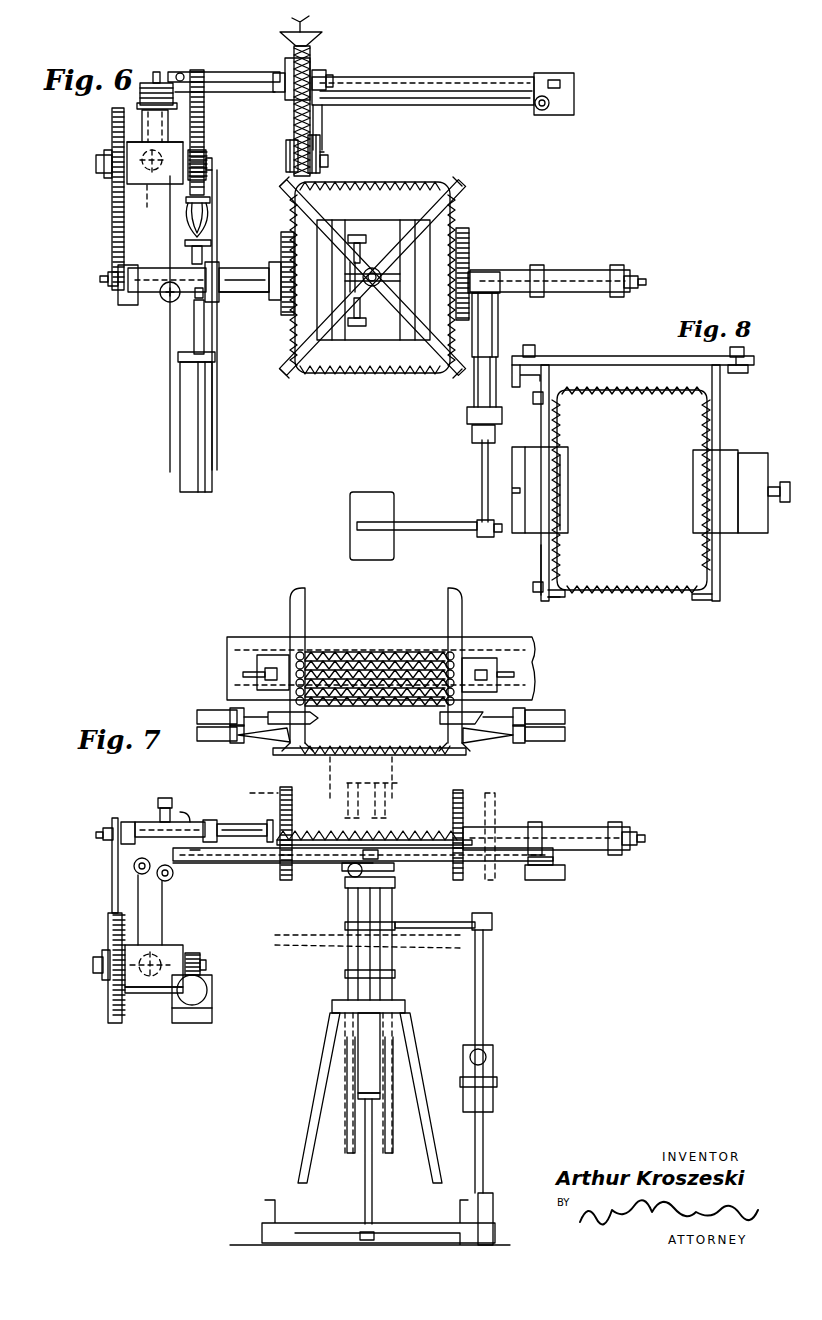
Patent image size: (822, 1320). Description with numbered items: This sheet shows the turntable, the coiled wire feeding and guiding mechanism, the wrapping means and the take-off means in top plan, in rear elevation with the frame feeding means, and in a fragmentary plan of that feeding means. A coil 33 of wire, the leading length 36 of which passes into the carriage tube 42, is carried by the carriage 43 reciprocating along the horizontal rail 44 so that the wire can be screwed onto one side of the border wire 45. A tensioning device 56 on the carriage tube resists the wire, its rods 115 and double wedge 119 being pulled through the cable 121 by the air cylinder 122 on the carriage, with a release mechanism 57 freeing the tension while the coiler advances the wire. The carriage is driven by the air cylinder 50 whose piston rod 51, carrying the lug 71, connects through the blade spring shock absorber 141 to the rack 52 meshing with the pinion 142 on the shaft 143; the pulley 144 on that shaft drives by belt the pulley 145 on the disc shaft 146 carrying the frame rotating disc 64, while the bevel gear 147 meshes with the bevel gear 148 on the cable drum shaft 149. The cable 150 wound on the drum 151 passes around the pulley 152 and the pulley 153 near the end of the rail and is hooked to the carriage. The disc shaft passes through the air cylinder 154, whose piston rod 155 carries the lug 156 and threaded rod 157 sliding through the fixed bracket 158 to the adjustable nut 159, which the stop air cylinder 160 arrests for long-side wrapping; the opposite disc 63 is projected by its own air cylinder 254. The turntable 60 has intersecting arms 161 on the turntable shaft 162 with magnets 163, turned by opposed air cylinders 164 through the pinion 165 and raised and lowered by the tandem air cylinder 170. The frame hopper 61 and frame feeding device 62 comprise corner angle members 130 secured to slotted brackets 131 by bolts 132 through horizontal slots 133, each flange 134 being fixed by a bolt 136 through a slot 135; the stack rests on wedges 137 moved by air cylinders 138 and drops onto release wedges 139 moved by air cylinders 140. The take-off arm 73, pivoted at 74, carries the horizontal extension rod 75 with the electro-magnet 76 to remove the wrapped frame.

In FIG. 6, the coil 33 is at (312, 20).
In FIG. 6, the leading length of coiled wire 36 is at (294, 124).
In FIG. 6, the carriage tube 42 is at (275, 44).
In FIG. 6, the carriage 43 is at (273, 74).
In FIG. 7, the carriage 43 is at (326, 872).
In FIG. 6, the horizontal rail 44 is at (373, 77).
In FIG. 7, the horizontal rail 44 is at (232, 864).
In FIG. 6, the border wire 45 is at (352, 380).
In FIG. 8, the border wire 45 is at (616, 598).
In FIG. 7, the border wire 45 is at (368, 650).
In FIG. 6, the air cylinder 50 is at (200, 494).
In FIG. 7, the air cylinder 50 is at (208, 996).
In FIG. 6, the piston rod 51 is at (206, 326).
In FIG. 6, the rack 52 is at (206, 130).
In FIG. 7, the rack 52 is at (168, 1022).
In FIG. 6, the tensioning device 56 is at (285, 157).
In FIG. 6, the release mechanism 57 is at (320, 148).
In FIG. 6, the turntable 60 is at (416, 338).
In FIG. 7, the turntable 60 is at (305, 940).
In FIG. 8, the frame hopper 61 is at (556, 600).
In FIG. 7, the frame hopper 61 is at (462, 609).
In FIG. 8, the frame feeding device 62 is at (572, 520).
In FIG. 7, the frame feeding device 62 is at (218, 739).
In FIG. 6, the frame rotating disc 63 is at (470, 232).
In FIG. 7, the frame rotating disc 63 is at (502, 803).
In FIG. 6, the frame rotating disc 64 is at (280, 230).
In FIG. 7, the frame rotating disc 64 is at (290, 786).
In FIG. 6, the reciprocating lug 71 is at (184, 244).
In FIG. 6, the arm 73 is at (480, 478).
In FIG. 7, the arm 73 is at (485, 1000).
In FIG. 6, the pivot 74 is at (466, 413).
In FIG. 7, the pivot 74 is at (498, 1082).
In FIG. 6, the horizontal extension rod 75 is at (428, 521).
In FIG. 7, the horizontal extension rod 75 is at (458, 912).
In FIG. 6, the electro-magnet 76 is at (368, 490).
In FIG. 7, the electro-magnet 76 is at (343, 925).
In FIG. 6, the rods 115 is at (326, 154).
In FIG. 6, the double wedge 119 is at (329, 165).
In FIG. 6, the cable 121 is at (326, 124).
In FIG. 6, the air cylinder 122 is at (328, 66).
In FIG. 8, the corner angle members 130 is at (720, 600).
In FIG. 7, the corner angle members 130 is at (308, 596).
In FIG. 8, the slotted brackets 131 is at (534, 548).
In FIG. 7, the slotted brackets 131 is at (268, 650).
In FIG. 8, the bolts 132 is at (530, 580).
In FIG. 7, the bolts 132 is at (476, 660).
In FIG. 8, the horizontal slots 133 is at (542, 567).
In FIG. 8, the flange 134 is at (527, 384).
In FIG. 7, the flange 134 is at (255, 663).
In FIG. 8, the slot 135 is at (568, 358).
In FIG. 7, the slot 135 is at (242, 670).
In FIG. 8, the bolt 136 is at (539, 350).
In FIG. 7, the bolt 136 is at (265, 677).
In FIG. 8, the wedges 137 is at (728, 456).
In FIG. 7, the wedges 137 is at (310, 720).
In FIG. 7, the air cylinders 138 is at (574, 706).
In FIG. 8, the release wedges 139 is at (752, 534).
In FIG. 7, the release wedges 139 is at (520, 753).
In FIG. 8, the air cylinders 140 is at (748, 496).
In FIG. 7, the air cylinders 140 is at (574, 734).
In FIG. 6, the shock absorber 141 is at (186, 220).
In FIG. 6, the pinion 142 is at (206, 178).
In FIG. 7, the pinion 142 is at (200, 950).
In FIG. 6, the shaft 143 is at (213, 164).
In FIG. 7, the shaft 143 is at (207, 965).
In FIG. 6, the pulley 144 is at (106, 136).
In FIG. 7, the pulley 144 is at (106, 920).
In FIG. 6, the pulley 145 is at (112, 264).
In FIG. 7, the pulley 145 is at (118, 846).
In FIG. 6, the disc shaft 146 is at (100, 284).
In FIG. 7, the disc shaft 146 is at (95, 835).
In FIG. 6, the bevel gear 147 is at (144, 200).
In FIG. 7, the bevel gear 147 is at (135, 996).
In FIG. 6, the bevel gear 148 is at (160, 170).
In FIG. 7, the bevel gear 148 is at (168, 942).
In FIG. 6, the cable drum shaft 149 is at (158, 70).
In FIG. 6, the cable 150 is at (422, 108).
In FIG. 7, the cable 150 is at (164, 896).
In FIG. 6, the drum 151 is at (136, 104).
In FIG. 6, the pulley 152 is at (212, 86).
In FIG. 7, the pulley 152 is at (174, 874).
In FIG. 6, the pulley 153 is at (546, 116).
In FIG. 7, the pulley 153 is at (548, 882).
In FIG. 6, the air cylinder 154 is at (150, 294).
In FIG. 7, the air cylinder 154 is at (150, 820).
In FIG. 6, the piston rod 155 is at (239, 268).
In FIG. 7, the piston rod 155 is at (238, 822).
In FIG. 6, the lug 156 is at (270, 304).
In FIG. 7, the lug 156 is at (270, 818).
In FIG. 6, the threaded rod 157 is at (238, 296).
In FIG. 7, the threaded rod 157 is at (204, 818).
In FIG. 6, the fixed bracket 158 is at (222, 258).
In FIG. 7, the fixed bracket 158 is at (178, 800).
In FIG. 6, the adjustable nut 159 is at (196, 302).
In FIG. 7, the adjustable nut 159 is at (172, 848).
In FIG. 6, the stop air cylinder 160 is at (170, 276).
In FIG. 7, the stop air cylinder 160 is at (164, 797).
In FIG. 6, the intersecting arms 161 is at (430, 214).
In FIG. 7, the intersecting arms 161 is at (404, 870).
In FIG. 6, the turntable shaft 162 is at (382, 268).
In FIG. 7, the turntable shaft 162 is at (378, 848).
In FIG. 6, the magnets 163 is at (466, 200).
In FIG. 6, the opposed air cylinders 164 is at (357, 332).
In FIG. 7, the opposed air cylinders 164 is at (350, 874).
In FIG. 6, the pinion 165 is at (349, 284).
In FIG. 7, the tandem air cylinder 170 is at (380, 1048).
In FIG. 6, the air cylinder 254 is at (586, 296).
In FIG. 7, the air cylinder 254 is at (576, 858).